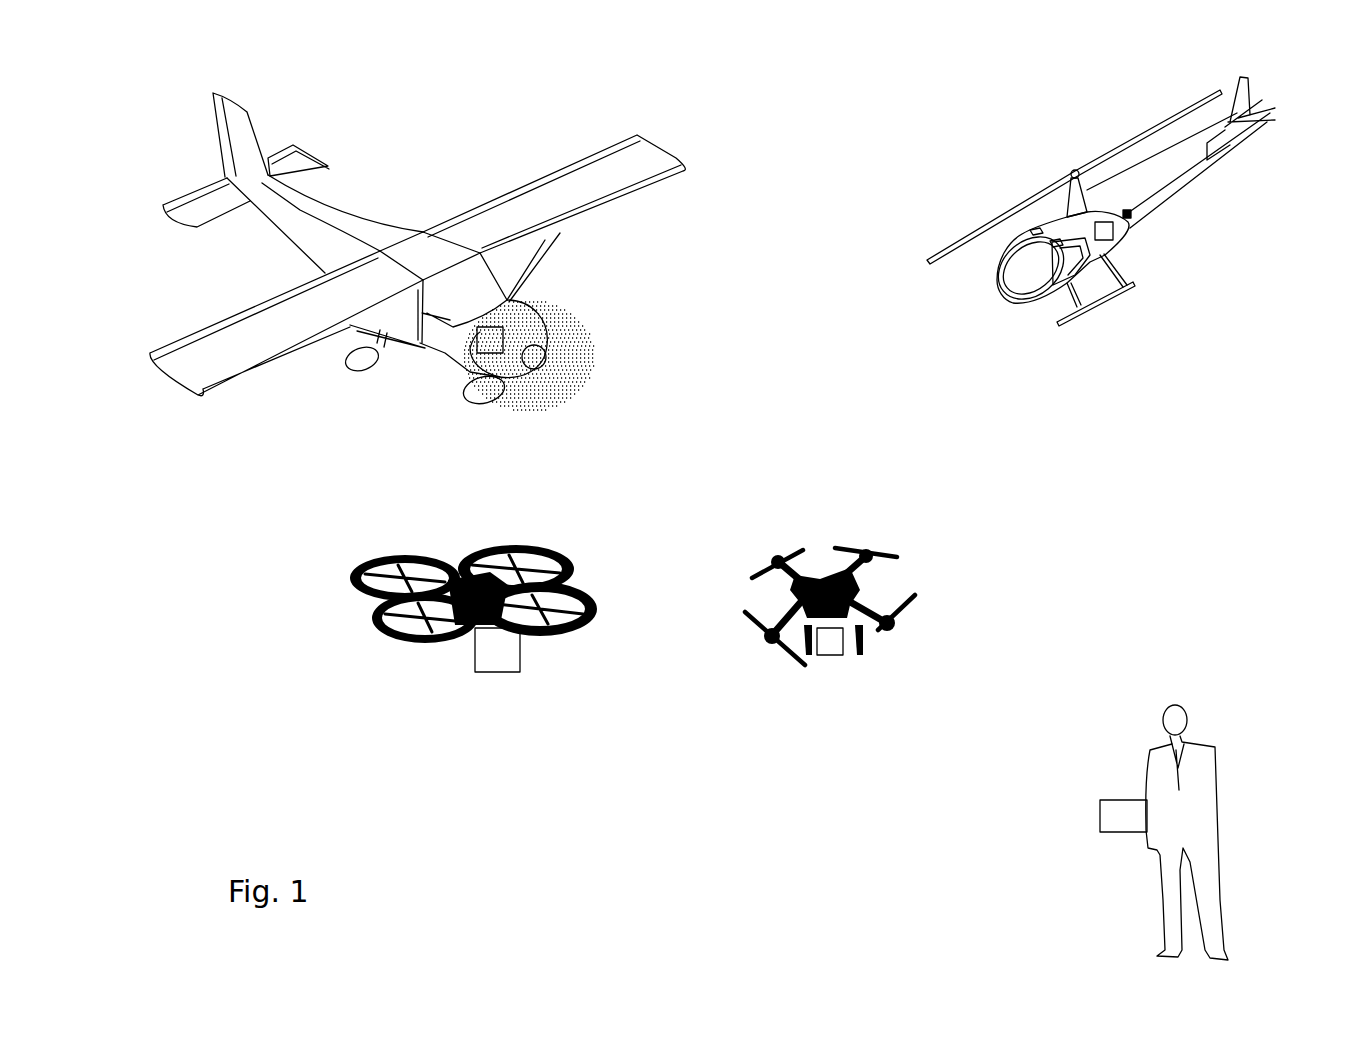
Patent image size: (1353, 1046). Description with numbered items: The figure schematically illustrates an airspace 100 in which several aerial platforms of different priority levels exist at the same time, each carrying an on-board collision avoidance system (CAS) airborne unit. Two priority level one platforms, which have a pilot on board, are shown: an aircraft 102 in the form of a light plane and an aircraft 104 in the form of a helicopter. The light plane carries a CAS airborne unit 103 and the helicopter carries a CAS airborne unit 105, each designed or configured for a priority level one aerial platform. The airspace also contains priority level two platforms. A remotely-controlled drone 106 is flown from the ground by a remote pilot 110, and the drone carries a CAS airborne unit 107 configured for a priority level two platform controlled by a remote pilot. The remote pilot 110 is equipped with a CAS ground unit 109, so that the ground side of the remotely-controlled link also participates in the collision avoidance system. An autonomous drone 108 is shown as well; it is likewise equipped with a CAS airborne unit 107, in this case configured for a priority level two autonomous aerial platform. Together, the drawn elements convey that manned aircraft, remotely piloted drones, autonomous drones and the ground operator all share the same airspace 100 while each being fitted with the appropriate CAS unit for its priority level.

The airspace 100 is at (787, 247).
The aircraft 102 is at (212, 188).
The CAS airborne unit 103 is at (477, 345).
The aircraft 104 is at (1142, 180).
The CAS airborne unit 105 is at (1117, 238).
The remotely-controlled drone 106 is at (870, 610).
The CAS airborne unit 107 is at (843, 655).
The autonomous drone 108 is at (597, 613).
The CAS ground unit 109 is at (520, 672).
The remote pilot 110 is at (1213, 752).